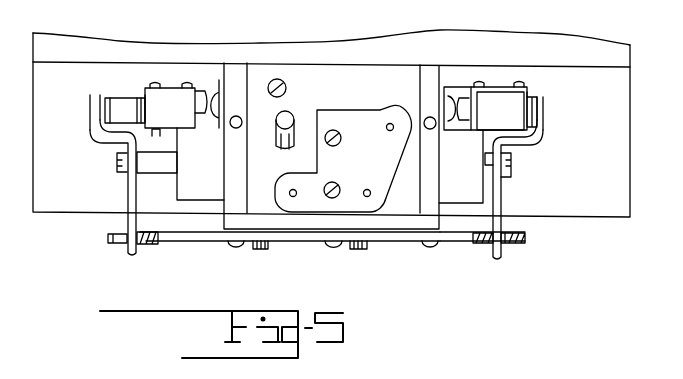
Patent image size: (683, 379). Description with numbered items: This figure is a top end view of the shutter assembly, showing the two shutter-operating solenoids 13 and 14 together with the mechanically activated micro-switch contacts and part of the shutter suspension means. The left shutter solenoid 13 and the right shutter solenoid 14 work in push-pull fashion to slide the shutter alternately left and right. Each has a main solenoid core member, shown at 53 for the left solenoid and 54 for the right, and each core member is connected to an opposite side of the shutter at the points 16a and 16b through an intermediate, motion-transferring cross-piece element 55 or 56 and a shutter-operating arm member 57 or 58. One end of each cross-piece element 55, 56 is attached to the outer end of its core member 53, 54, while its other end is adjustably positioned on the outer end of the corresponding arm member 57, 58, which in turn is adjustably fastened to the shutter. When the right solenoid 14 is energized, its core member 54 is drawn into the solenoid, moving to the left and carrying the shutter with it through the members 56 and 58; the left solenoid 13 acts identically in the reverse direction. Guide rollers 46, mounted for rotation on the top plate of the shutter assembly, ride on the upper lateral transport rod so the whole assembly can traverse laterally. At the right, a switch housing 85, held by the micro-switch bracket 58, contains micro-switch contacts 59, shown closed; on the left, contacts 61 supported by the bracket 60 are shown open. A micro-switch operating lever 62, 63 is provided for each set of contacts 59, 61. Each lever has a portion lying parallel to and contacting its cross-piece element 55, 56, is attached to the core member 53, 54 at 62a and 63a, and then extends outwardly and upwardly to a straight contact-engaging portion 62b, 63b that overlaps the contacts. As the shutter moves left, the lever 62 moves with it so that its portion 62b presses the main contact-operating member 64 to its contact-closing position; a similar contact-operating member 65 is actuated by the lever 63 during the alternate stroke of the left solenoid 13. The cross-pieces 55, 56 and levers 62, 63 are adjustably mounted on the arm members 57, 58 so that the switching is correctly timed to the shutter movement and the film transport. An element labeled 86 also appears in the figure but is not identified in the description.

The shutter solenoid 13 is at (209, 175).
The shutter solenoid 14 is at (467, 184).
The shutter connection point 16a is at (258, 252).
The shutter connection point 16b is at (362, 252).
The guide roller 46 is at (407, 110).
The main solenoid core member 53 is at (157, 175).
The main solenoid core member 54 is at (485, 160).
The intermediate motion-transferring cross-piece element 55 is at (140, 219).
The intermediate motion-transferring cross-piece element 56 is at (487, 233).
The shutter-operating arm member 57 is at (177, 246).
The shutter-operating arm member 58 is at (475, 240).
The micro-switch contacts 59 is at (535, 90).
The micro-switch bracket 60 is at (177, 116).
The micro-switch contacts 61 is at (131, 88).
The micro-switch operating lever 62 is at (502, 200).
The lever attachment portion 62a is at (512, 172).
The micro-switch contact engaging portion 62b is at (543, 127).
The micro-switch operating lever 63 is at (127, 203).
The lever attachment portion 63a is at (117, 154).
The micro-switch contact engaging portion 63b is at (90, 118).
The main micro-switch contact-operating member 64 is at (533, 112).
The micro-switch contact-operating member 65 is at (105, 98).
The switch housing 85 is at (458, 87).
The solenoid coil 86 is at (503, 119).